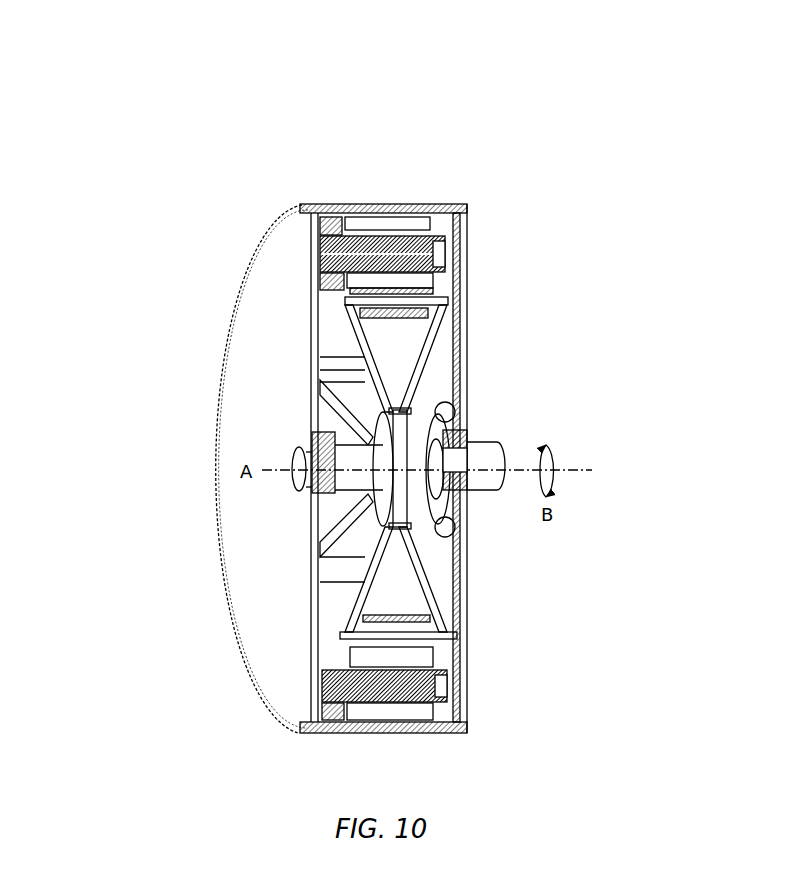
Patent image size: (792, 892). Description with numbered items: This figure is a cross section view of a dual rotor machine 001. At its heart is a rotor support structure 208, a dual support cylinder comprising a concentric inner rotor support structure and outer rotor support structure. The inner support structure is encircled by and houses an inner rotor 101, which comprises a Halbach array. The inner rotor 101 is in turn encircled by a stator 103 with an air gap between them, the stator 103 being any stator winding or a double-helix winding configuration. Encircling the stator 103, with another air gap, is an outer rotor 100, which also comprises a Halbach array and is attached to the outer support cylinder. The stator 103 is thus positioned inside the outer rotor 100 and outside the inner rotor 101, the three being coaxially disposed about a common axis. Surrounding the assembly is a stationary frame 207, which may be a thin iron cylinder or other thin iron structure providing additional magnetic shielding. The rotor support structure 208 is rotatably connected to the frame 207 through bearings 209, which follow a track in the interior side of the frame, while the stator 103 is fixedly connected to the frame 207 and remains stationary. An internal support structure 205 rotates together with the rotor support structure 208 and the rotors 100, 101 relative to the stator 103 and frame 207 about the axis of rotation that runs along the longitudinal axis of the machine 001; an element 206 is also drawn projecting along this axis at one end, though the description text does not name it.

The dual rotor machine 001 is at (447, 165).
The outer rotor 100 is at (357, 222).
The inner rotor 101 is at (355, 283).
The stator 103 is at (445, 252).
The internal support structure 205 is at (350, 372).
The output shaft 206 is at (487, 460).
The frame 207 is at (245, 498).
The rotor support structure 208 is at (440, 293).
The bearings 209 is at (462, 436).